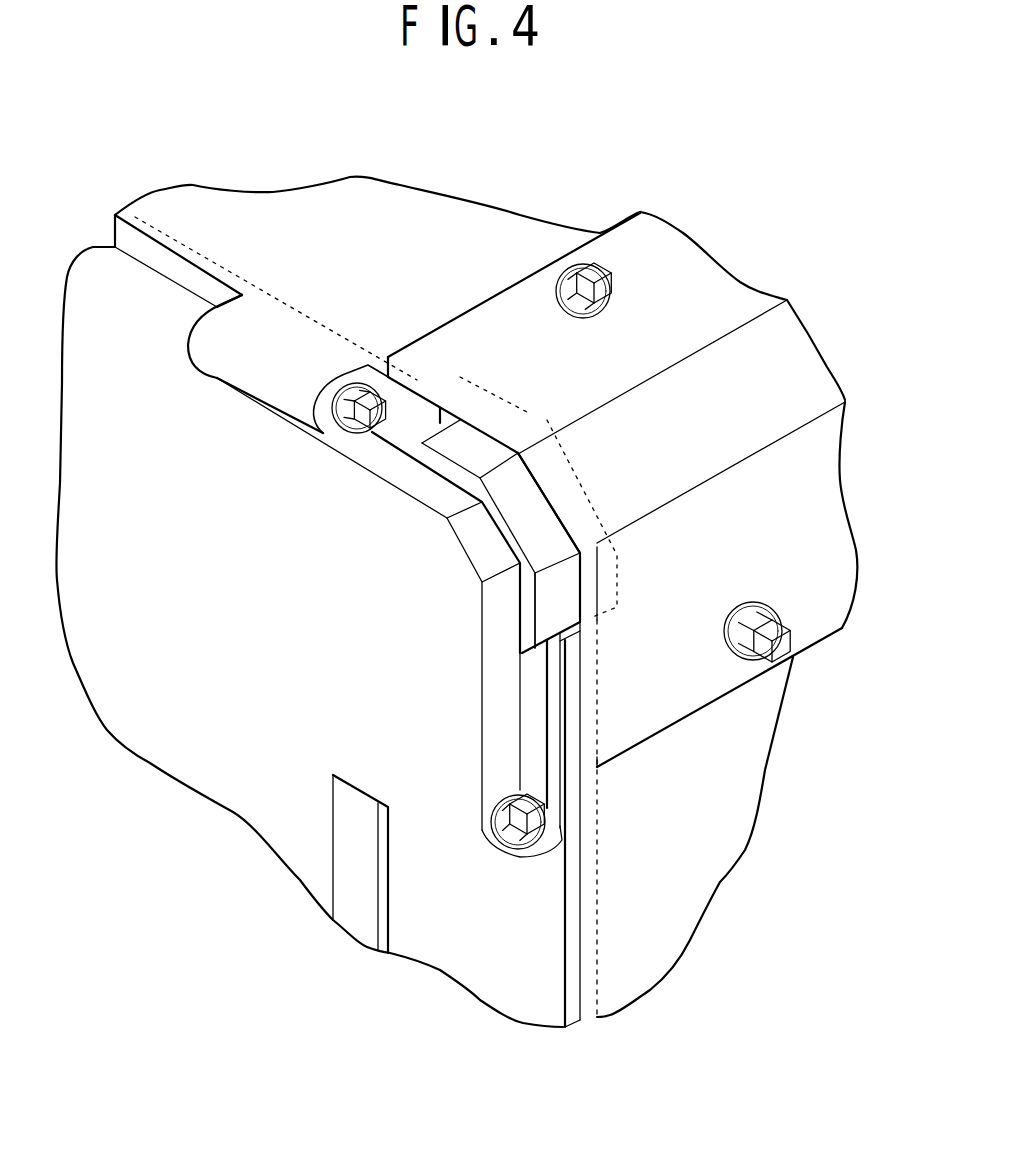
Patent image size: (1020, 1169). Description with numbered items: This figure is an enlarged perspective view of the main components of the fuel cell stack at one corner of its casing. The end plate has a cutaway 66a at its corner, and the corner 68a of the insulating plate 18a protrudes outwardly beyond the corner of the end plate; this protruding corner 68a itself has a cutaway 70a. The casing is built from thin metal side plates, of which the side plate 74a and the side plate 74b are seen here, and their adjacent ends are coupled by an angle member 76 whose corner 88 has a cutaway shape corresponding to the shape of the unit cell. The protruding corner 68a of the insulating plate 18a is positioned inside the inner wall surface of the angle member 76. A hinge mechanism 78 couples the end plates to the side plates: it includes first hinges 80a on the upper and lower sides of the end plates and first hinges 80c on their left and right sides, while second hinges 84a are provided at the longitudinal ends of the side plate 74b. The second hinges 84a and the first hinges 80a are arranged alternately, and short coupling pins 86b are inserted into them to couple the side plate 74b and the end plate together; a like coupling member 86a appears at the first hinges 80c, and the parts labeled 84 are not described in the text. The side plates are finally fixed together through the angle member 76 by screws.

The insulating plate 18a is at (322, 362).
The cutaway 66a is at (483, 537).
The corner 68a is at (553, 600).
The cutaway 70a is at (538, 515).
The side plate 74a is at (727, 817).
The side plate 74b is at (440, 236).
The angle member 76 is at (810, 472).
The hinge mechanism 78 is at (222, 381).
The first hinge 80a is at (143, 315).
The first hinge 80c is at (547, 910).
The bolt 84 is at (580, 265).
The second hinge 84a is at (260, 367).
The bolt 86a is at (520, 805).
The short coupling pin 86b is at (365, 424).
The corner 88 is at (807, 380).